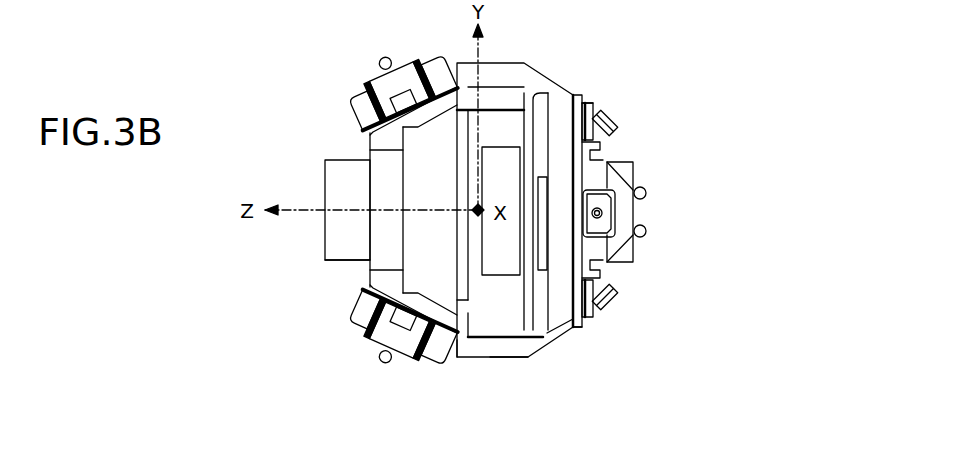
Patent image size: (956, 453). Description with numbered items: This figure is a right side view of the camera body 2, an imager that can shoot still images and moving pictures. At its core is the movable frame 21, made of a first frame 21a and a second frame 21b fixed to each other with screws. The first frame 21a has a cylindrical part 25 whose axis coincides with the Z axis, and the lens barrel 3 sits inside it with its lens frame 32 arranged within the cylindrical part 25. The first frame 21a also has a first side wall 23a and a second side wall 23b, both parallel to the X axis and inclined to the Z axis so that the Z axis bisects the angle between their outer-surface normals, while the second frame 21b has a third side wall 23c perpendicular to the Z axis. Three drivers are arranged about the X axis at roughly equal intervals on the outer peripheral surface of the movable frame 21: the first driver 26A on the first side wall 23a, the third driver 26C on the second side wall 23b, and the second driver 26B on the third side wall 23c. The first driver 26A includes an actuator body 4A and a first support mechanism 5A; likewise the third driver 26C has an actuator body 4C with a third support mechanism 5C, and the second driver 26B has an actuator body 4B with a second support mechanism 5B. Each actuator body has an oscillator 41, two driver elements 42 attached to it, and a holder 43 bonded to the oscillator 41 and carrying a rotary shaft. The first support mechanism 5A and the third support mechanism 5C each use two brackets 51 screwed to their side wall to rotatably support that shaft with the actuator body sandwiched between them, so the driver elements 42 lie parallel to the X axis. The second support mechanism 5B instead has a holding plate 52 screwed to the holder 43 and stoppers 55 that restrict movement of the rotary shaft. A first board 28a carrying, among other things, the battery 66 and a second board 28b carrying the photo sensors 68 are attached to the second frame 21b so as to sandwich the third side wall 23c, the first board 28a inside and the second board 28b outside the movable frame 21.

The camera body 2 is at (757, 108).
The lens barrel 3 is at (322, 233).
The actuator body 4A is at (380, 40).
The actuator body 4B is at (672, 193).
The actuator body 4C is at (394, 368).
The first support mechanism 5A is at (450, 60).
The second support mechanism 5B is at (618, 271).
The third support mechanism 5C is at (440, 367).
The movable frame 21 is at (568, 392).
The first frame 21a is at (462, 360).
The second frame 21b is at (513, 358).
The first side wall 23a is at (374, 121).
The second side wall 23b is at (374, 297).
The third side wall 23c is at (588, 108).
The cylindrical part 25 is at (367, 144).
The first driver 26A is at (312, 46).
The second driver 26B is at (707, 196).
The third driver 26C is at (374, 386).
The first board 28a is at (531, 98).
The second board 28b is at (583, 327).
The lens frame 32 is at (343, 262).
The oscillator 41 is at (385, 75).
The driver elements 42 is at (381, 58).
The holder 43 is at (378, 64).
The brackets 51 is at (360, 82).
The holding plate 52 is at (613, 148).
The stoppers 55 is at (628, 245).
The battery 66 is at (502, 146).
The photo sensors 68 is at (612, 127).